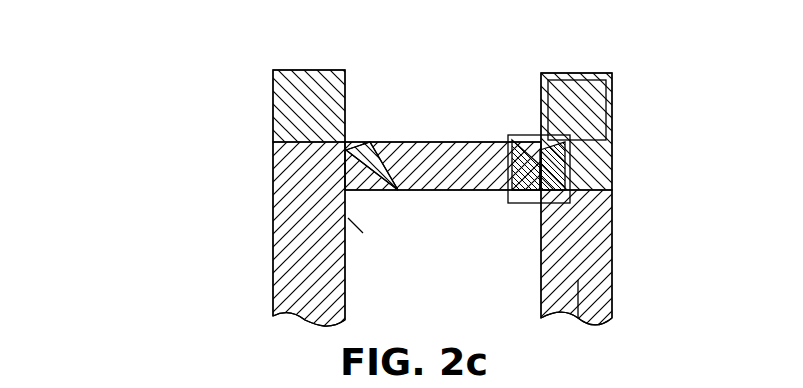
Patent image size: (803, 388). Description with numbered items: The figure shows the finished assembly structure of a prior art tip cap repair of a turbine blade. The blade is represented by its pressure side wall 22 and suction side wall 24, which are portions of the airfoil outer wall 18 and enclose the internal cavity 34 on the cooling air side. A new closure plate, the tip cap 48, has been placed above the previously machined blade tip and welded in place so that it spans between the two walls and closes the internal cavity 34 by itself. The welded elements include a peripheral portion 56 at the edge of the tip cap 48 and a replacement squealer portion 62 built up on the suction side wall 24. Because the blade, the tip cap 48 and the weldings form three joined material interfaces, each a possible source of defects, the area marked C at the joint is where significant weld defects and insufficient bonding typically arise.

The airfoil outer wall 18 is at (576, 313).
The pressure side wall 22 is at (270, 278).
The suction side wall 24 is at (613, 268).
The internal cavity 34 is at (457, 243).
The closure plate/tip cap 48 is at (463, 150).
The peripheral portion 56 is at (613, 168).
The replacement squealer portion 62 is at (582, 102).
The area C is at (570, 178).